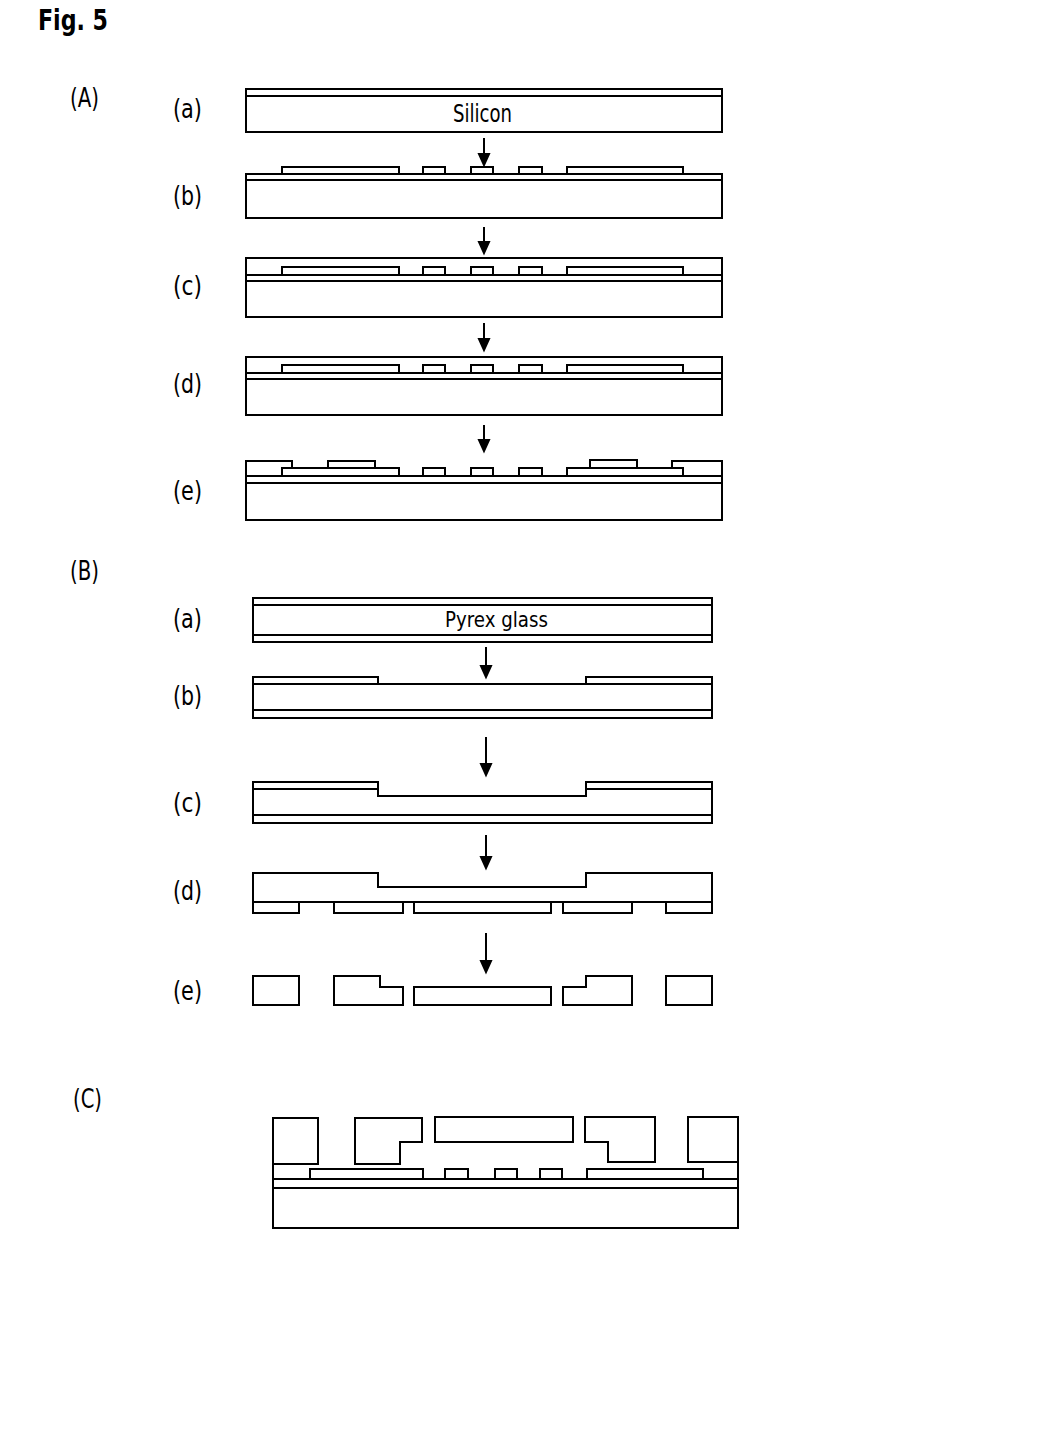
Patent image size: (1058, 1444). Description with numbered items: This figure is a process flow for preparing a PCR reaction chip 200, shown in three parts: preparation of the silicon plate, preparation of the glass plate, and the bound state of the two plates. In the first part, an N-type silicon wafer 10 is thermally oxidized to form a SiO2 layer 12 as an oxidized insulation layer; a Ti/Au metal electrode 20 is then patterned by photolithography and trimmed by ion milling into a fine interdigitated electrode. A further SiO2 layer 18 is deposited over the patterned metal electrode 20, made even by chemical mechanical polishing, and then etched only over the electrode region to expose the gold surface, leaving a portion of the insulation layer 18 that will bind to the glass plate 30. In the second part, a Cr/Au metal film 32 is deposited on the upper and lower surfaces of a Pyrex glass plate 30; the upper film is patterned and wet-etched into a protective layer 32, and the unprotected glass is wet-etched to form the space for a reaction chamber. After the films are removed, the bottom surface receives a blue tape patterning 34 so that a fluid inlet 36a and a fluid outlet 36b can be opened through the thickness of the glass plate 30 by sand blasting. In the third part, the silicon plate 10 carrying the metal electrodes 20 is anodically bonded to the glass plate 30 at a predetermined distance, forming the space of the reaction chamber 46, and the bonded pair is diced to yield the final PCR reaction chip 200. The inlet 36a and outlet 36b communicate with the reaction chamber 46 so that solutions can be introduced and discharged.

The silicon wafer 10 is at (722, 112).
The SiO2 layer 12 is at (722, 92).
The SiO2 layer 18 is at (712, 256).
The metal electrode 20 is at (683, 167).
The glass plate 30 is at (712, 620).
The metal film 32 is at (712, 600).
The blue tape patterning 34 is at (712, 905).
The fluid inlet 36a is at (430, 1122).
The fluid outlet 36b is at (577, 1122).
The reaction chamber 46 is at (458, 1157).
The PCR reaction chip 200 is at (245, 1093).